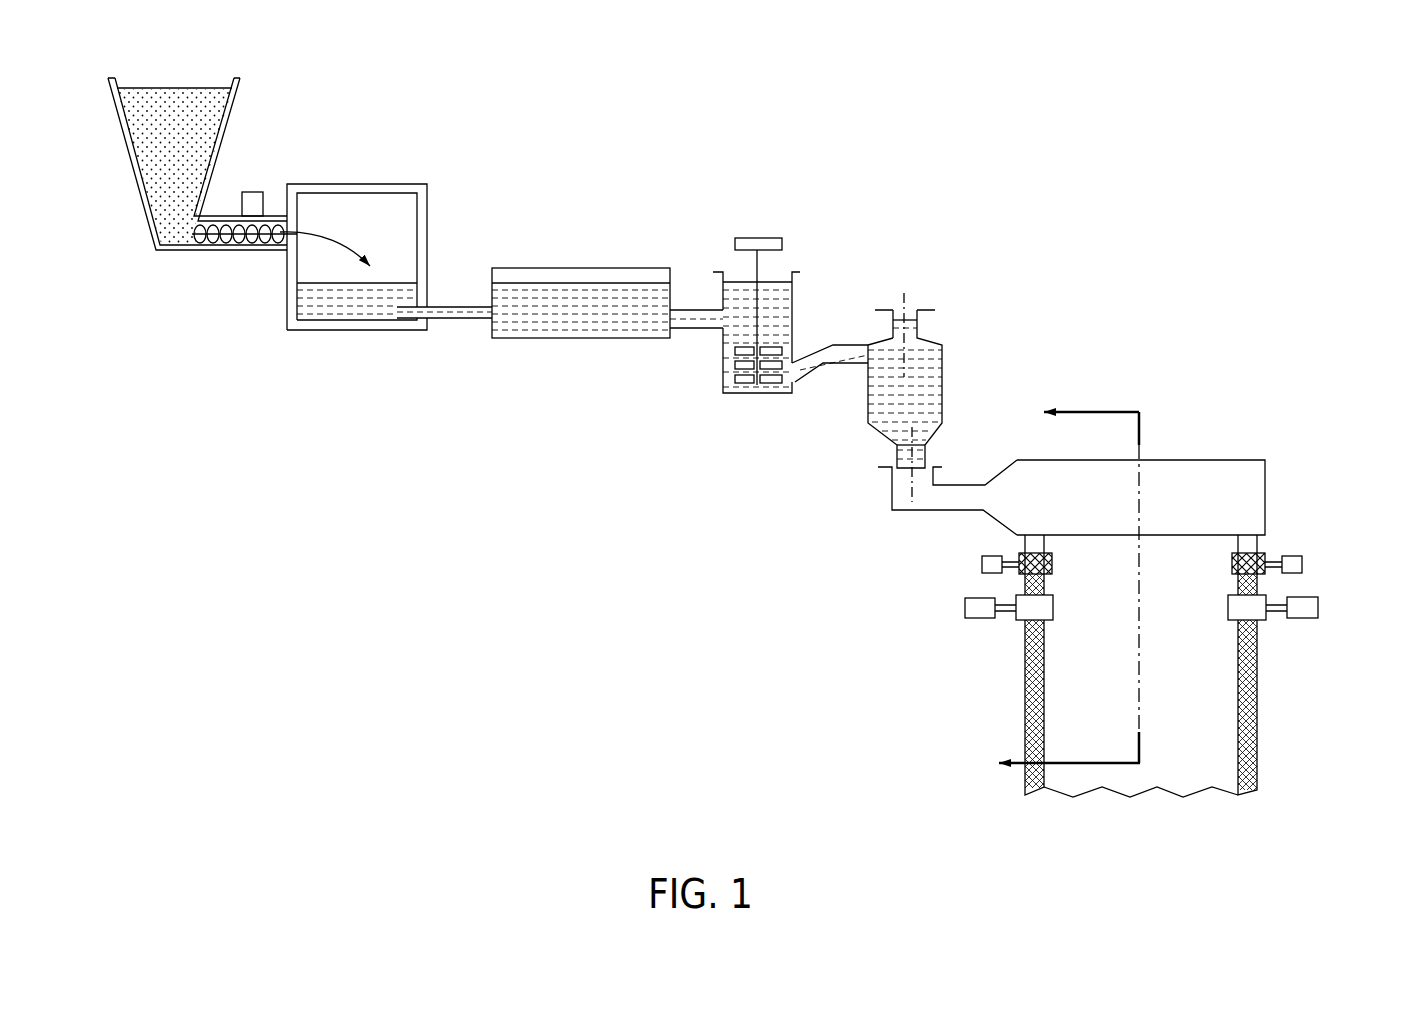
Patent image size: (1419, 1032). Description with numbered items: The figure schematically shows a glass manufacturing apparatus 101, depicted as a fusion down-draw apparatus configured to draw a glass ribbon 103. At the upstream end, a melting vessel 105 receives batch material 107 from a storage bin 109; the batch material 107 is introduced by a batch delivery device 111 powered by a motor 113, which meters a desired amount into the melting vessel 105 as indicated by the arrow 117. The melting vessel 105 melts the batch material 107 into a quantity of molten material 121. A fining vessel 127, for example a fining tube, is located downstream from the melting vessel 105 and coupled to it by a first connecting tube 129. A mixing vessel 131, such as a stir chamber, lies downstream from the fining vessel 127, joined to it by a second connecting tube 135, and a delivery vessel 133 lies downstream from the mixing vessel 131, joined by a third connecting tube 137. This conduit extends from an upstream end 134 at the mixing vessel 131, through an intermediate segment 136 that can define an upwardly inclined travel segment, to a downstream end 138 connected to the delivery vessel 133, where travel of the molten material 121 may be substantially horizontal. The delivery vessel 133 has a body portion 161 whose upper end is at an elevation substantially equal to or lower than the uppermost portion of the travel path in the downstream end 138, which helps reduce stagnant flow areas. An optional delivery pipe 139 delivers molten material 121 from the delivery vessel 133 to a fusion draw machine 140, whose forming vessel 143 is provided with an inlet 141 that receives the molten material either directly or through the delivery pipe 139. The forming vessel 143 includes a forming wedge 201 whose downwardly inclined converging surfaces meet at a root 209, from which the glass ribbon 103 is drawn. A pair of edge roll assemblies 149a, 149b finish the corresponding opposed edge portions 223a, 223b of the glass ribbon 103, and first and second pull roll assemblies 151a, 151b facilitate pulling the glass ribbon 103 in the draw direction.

The glass manufacturing apparatus 101 is at (933, 230).
The melting vessel 105 is at (337, 353).
The batch material 107 is at (165, 88).
The storage bin 109 is at (128, 163).
The batch delivery device 111 is at (232, 243).
The motor 113 is at (262, 192).
The arrow 117 is at (320, 232).
The molten material 121 is at (395, 282).
The fining vessel 127 is at (573, 267).
The first connecting tube 129 is at (460, 305).
The mixing vessel 131 is at (793, 293).
The delivery vessel 133 is at (957, 322).
The upstream end 134 is at (797, 383).
The second connecting tube 135 is at (702, 332).
The intermediate segment 136 is at (817, 348).
The third connecting tube 137 is at (818, 387).
The downstream end 138 is at (853, 340).
The delivery pipe 139 is at (930, 450).
The fusion draw machine 140 is at (1277, 437).
The inlet 141 is at (890, 493).
The forming vessel 143 is at (1182, 460).
The edge roll assembly 149a is at (967, 565).
The edge roll assembly 149b is at (1302, 550).
The first pull roll assembly 151a is at (947, 617).
The second pull roll assembly 151b is at (1320, 588).
The body portion 161 is at (943, 358).
The forming wedge 201 is at (1247, 508).
The root 209 is at (1162, 543).
The glass ribbon 103 is at (1112, 547).
The edge portion 223a is at (1017, 720).
The edge portion 223b is at (1272, 720).